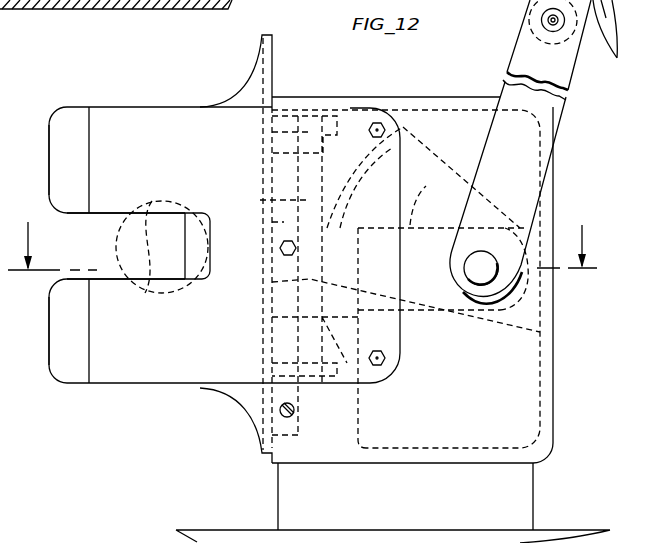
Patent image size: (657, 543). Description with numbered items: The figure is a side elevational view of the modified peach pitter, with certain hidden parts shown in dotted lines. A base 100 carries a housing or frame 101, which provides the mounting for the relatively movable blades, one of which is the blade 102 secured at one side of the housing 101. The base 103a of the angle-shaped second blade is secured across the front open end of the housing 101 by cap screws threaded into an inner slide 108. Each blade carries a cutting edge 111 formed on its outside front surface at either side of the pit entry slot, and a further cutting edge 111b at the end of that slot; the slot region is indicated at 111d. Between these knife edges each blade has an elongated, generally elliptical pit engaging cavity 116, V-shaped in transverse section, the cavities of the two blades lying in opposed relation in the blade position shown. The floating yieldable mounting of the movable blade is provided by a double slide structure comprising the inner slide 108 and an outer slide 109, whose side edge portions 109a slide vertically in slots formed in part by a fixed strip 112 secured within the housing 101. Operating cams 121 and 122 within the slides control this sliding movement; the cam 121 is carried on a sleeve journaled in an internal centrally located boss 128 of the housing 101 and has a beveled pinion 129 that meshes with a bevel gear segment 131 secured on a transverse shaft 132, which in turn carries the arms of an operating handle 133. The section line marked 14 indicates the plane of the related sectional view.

The base 100 is at (523, 512).
The housing or frame 101 is at (545, 398).
The blade 102 is at (168, 371).
The base of angle-shaped blade 103a is at (262, 80).
The inner slide 108 is at (341, 127).
The outer slide 109 is at (284, 361).
The side edge portions of outer slide 109a is at (262, 200).
The cutting edge 111 is at (58, 170).
The cutting edge at end of slot 111b is at (198, 230).
The slot 111d is at (120, 244).
The fixed strip 112 is at (302, 421).
The pit engaging cavity 116 is at (144, 249).
The operating cam 121 is at (272, 288).
The operating cam 122 is at (283, 222).
The internal centrally located boss 128 is at (414, 205).
The beveled pinion 129 is at (355, 208).
The bevel gear segment 131 is at (422, 134).
The transverse shaft 132 is at (476, 280).
The operating handle 133 is at (562, 110).
The section line 14- 14 is at (306, 246).